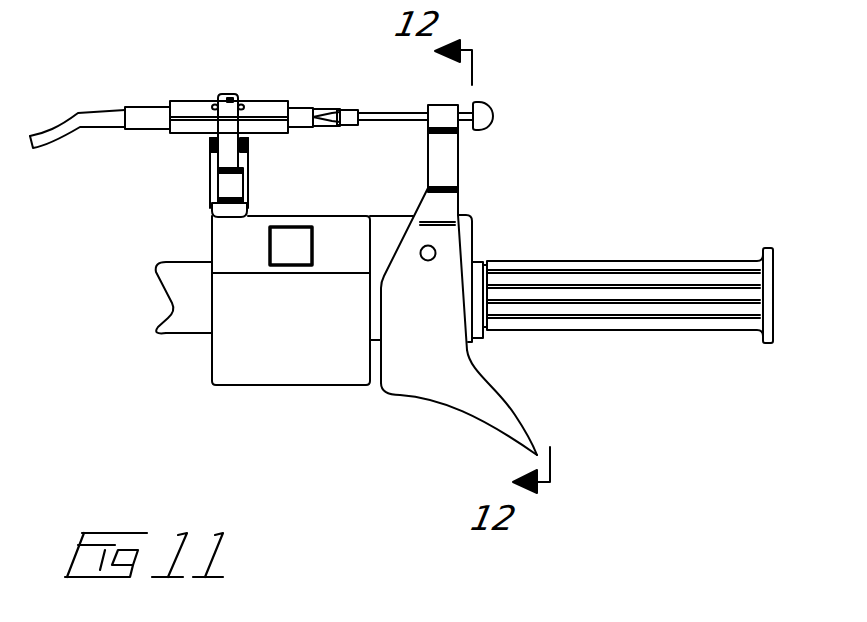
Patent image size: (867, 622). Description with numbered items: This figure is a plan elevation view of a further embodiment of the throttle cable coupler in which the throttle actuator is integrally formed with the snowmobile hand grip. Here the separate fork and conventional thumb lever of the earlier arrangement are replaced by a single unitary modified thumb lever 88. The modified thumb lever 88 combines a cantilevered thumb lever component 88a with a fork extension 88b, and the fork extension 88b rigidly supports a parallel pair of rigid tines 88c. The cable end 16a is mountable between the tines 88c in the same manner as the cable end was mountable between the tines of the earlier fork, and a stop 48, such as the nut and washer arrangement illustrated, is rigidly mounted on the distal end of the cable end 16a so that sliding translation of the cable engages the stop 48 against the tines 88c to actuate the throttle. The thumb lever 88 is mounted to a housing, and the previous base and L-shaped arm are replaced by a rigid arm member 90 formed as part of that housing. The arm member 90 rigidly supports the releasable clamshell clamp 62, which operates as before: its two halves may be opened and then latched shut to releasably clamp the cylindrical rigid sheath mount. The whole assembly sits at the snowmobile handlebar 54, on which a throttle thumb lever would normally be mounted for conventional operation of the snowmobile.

The clamshell clamp 62 is at (202, 93).
The rigid arm member 90 is at (250, 187).
The cable end 16a is at (393, 110).
The stop 48 is at (480, 101).
The modified thumb lever 88 is at (462, 301).
The thumb lever component 88a is at (507, 393).
The fork extension 88b is at (453, 205).
The rigid tines 88c is at (460, 150).
The handlebar 54 is at (733, 255).